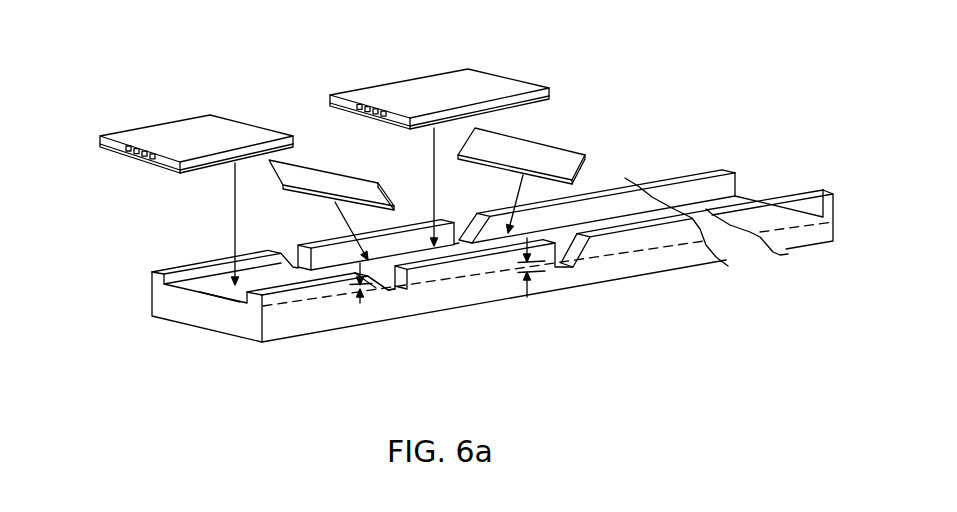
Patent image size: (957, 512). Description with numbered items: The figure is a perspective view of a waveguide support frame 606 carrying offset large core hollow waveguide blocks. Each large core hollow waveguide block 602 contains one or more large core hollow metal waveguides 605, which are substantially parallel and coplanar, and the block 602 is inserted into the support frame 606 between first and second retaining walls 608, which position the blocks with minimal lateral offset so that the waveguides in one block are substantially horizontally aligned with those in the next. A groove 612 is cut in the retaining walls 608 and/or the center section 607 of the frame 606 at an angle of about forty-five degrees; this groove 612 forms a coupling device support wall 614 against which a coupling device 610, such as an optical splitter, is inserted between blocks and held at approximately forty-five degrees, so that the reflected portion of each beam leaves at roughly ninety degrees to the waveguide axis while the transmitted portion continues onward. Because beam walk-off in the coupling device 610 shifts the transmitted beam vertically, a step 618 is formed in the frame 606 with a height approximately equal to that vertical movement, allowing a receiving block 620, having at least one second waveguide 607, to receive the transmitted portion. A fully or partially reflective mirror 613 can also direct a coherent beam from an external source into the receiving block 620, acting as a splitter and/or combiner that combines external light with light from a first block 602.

The large core hollow waveguide block 602 is at (179, 182).
The large core hollow metal waveguide 605 is at (118, 153).
The waveguide support frame 606 is at (459, 229).
The center section of the waveguide frame 607 is at (223, 302).
The retaining wall 608 is at (152, 272).
The coupling device 610 is at (544, 148).
The groove 612 is at (407, 288).
The fully or partially reflective mirror 613 is at (345, 176).
The coupling device support wall 614 is at (456, 220).
The step 618 is at (358, 306).
The receiving block 620 is at (420, 93).